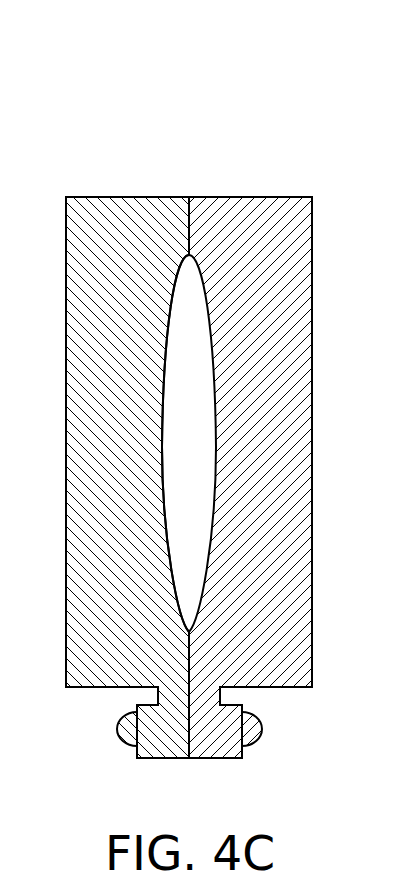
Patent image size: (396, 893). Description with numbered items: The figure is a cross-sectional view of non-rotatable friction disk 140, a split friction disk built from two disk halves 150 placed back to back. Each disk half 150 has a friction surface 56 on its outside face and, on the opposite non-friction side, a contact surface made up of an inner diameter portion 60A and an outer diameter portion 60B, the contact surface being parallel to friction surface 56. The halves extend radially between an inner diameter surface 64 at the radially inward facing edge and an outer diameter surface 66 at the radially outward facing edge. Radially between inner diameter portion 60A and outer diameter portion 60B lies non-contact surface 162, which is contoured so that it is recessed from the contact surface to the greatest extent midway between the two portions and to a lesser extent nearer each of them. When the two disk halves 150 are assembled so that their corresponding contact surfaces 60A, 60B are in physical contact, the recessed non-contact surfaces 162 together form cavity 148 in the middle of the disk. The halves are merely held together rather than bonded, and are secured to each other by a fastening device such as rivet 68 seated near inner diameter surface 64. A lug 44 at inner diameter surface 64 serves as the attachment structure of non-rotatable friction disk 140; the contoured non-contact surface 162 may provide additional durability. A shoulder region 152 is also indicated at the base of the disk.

The lug 44 is at (240, 778).
The friction surface 56 is at (66, 448).
The inner diameter portion of contact surface 60A is at (191, 648).
The outer diameter portion of contact surface 60B is at (191, 240).
The inner diameter surface 64 is at (87, 687).
The outer diameter surface 66 is at (80, 197).
The rivet 68 is at (261, 733).
The non-rotatable friction disk 140 is at (215, 100).
The cavity 148 is at (172, 499).
The disk half 150 is at (122, 183).
The shoulder/notch 152 is at (240, 697).
The non-contact surface 162 is at (163, 380).